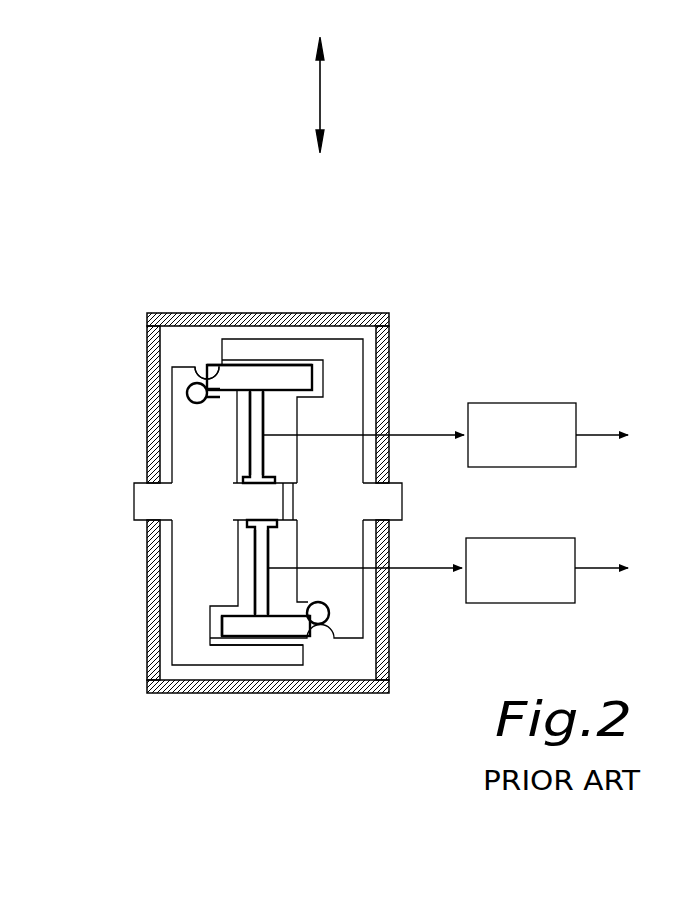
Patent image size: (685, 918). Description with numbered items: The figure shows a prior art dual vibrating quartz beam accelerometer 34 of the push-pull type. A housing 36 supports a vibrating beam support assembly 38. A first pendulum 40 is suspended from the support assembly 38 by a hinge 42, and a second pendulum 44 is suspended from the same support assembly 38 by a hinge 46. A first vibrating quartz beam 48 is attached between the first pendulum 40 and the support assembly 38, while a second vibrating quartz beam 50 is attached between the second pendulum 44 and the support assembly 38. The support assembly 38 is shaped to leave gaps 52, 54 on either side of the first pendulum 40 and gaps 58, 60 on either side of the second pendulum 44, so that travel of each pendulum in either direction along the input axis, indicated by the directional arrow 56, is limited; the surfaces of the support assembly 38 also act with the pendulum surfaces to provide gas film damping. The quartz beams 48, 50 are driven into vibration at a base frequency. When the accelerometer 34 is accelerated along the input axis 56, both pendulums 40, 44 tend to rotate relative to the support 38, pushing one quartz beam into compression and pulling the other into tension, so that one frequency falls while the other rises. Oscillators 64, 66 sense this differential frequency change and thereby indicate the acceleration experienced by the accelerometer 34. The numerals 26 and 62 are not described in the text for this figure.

The cross member 26 is at (201, 543).
The dual vibrating quartz beam accelerometer 34 is at (422, 200).
The housing 36 is at (357, 313).
The vibrating beam support assembly 38 is at (365, 367).
The first pendulum 40 is at (277, 377).
The hinge 42 is at (208, 371).
The second pendulum 44 is at (302, 630).
The hinge 46 is at (322, 634).
The first vibrating quartz beam 48 is at (256, 416).
The second vibrating quartz beam 50 is at (253, 597).
The gap 52 is at (250, 367).
The gap 54 is at (227, 390).
The directional arrow 56 is at (320, 90).
The gap 58 is at (232, 628).
The gap 60 is at (252, 645).
The cavity 62 is at (187, 342).
The oscillator 64 is at (500, 403).
The oscillator 66 is at (512, 603).